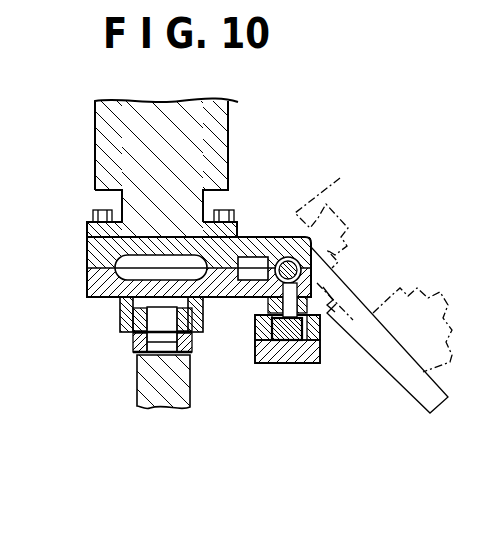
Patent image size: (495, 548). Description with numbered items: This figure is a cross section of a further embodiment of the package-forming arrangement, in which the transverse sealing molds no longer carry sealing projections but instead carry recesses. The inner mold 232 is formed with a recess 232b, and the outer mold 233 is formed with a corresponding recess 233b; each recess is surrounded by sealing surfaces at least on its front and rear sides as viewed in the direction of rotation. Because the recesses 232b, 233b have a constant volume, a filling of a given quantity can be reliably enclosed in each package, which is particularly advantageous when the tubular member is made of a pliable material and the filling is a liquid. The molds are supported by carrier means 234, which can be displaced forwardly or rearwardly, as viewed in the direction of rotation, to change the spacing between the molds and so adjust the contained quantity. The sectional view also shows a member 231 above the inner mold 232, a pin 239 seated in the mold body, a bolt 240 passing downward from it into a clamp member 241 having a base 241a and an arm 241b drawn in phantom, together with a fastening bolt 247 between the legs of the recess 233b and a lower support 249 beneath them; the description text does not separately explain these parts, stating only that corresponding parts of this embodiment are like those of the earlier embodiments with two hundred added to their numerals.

The upper member 231 is at (229, 133).
The inner mold 232 is at (86, 243).
The recess 232b is at (158, 263).
The outer mold 233 is at (93, 298).
The recess 233b is at (121, 299).
The carrier means 234 is at (86, 262).
The pin 239 is at (288, 261).
The bolt 240 is at (272, 323).
The clamp member 241 is at (318, 330).
The clamp base 241a is at (258, 357).
The clamp arm 241b is at (345, 240).
The fastening bolt 247 is at (140, 346).
The support 249 is at (143, 386).